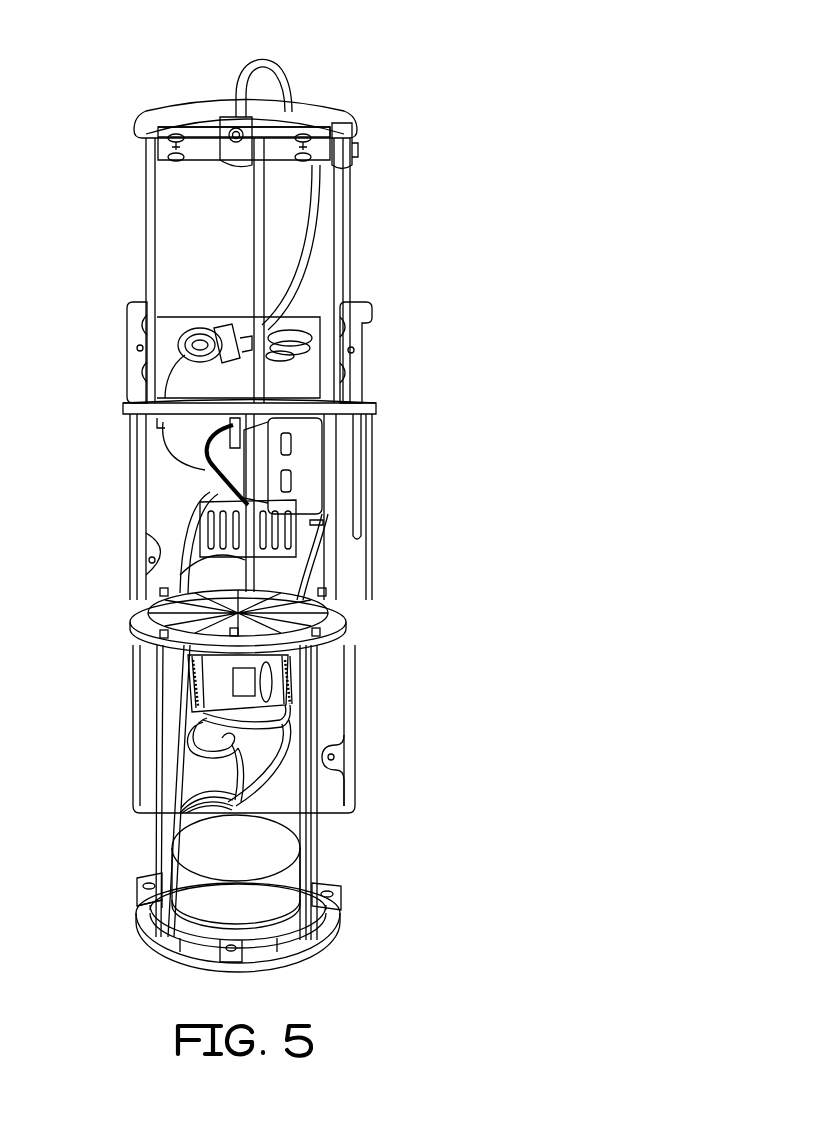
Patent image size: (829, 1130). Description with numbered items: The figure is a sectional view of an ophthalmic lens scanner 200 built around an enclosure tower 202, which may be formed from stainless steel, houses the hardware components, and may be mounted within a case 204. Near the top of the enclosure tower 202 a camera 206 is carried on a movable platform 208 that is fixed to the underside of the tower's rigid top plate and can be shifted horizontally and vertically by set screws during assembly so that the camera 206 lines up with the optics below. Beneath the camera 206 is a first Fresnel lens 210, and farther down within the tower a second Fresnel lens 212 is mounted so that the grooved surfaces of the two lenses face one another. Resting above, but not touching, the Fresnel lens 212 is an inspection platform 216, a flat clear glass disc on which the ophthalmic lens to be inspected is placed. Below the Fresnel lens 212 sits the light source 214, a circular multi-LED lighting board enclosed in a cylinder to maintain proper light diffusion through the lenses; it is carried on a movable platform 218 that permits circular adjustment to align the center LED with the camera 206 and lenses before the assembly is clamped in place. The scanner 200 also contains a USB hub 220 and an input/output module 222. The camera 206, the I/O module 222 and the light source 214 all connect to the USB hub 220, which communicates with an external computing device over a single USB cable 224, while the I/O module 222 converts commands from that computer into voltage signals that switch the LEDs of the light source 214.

The ophthalmic lens scanner 200 is at (400, 104).
The enclosure tower 202 is at (342, 254).
The case 204 is at (172, 255).
The camera 206 is at (236, 128).
The movable platform 208 is at (203, 145).
The Fresnel lens 210 is at (336, 414).
The Fresnel lens 212 is at (137, 636).
The light source 214 is at (272, 860).
The inspection platform 216 is at (283, 632).
The movable platform 218 is at (187, 947).
The USB hub 220 is at (290, 465).
The input/output (I/O) module 222 is at (216, 695).
The USB cable 224 is at (330, 756).